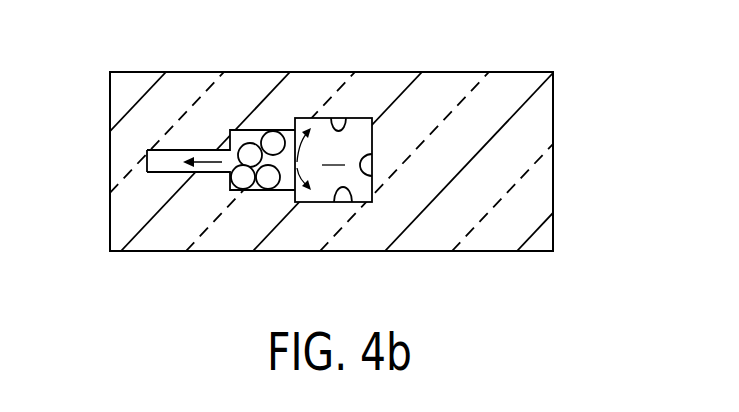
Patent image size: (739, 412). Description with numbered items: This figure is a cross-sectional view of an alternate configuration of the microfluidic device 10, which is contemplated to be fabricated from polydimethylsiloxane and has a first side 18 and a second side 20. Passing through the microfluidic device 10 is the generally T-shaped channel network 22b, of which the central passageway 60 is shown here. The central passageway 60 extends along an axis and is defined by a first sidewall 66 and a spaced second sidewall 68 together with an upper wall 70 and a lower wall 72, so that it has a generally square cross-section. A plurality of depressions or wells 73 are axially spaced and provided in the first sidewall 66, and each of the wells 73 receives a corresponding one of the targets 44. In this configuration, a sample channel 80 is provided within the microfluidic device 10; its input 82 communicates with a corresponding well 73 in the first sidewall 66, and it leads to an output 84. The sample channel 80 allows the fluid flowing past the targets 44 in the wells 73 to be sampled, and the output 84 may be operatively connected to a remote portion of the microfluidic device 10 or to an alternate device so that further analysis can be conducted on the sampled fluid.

The microfluidic device 10 is at (578, 278).
The first side 18 is at (110, 134).
The second side 20 is at (555, 167).
The channel network 22b is at (362, 106).
The targets 44 is at (270, 192).
The central passageway 60 is at (333, 160).
The first sidewall 66 is at (310, 117).
The second sidewall 68 is at (370, 160).
The upper wall 70 is at (332, 118).
The lower wall 72 is at (353, 202).
The wells 73 is at (298, 186).
The sample channels 80 is at (182, 150).
The input 82 is at (232, 176).
The output 84 is at (140, 167).